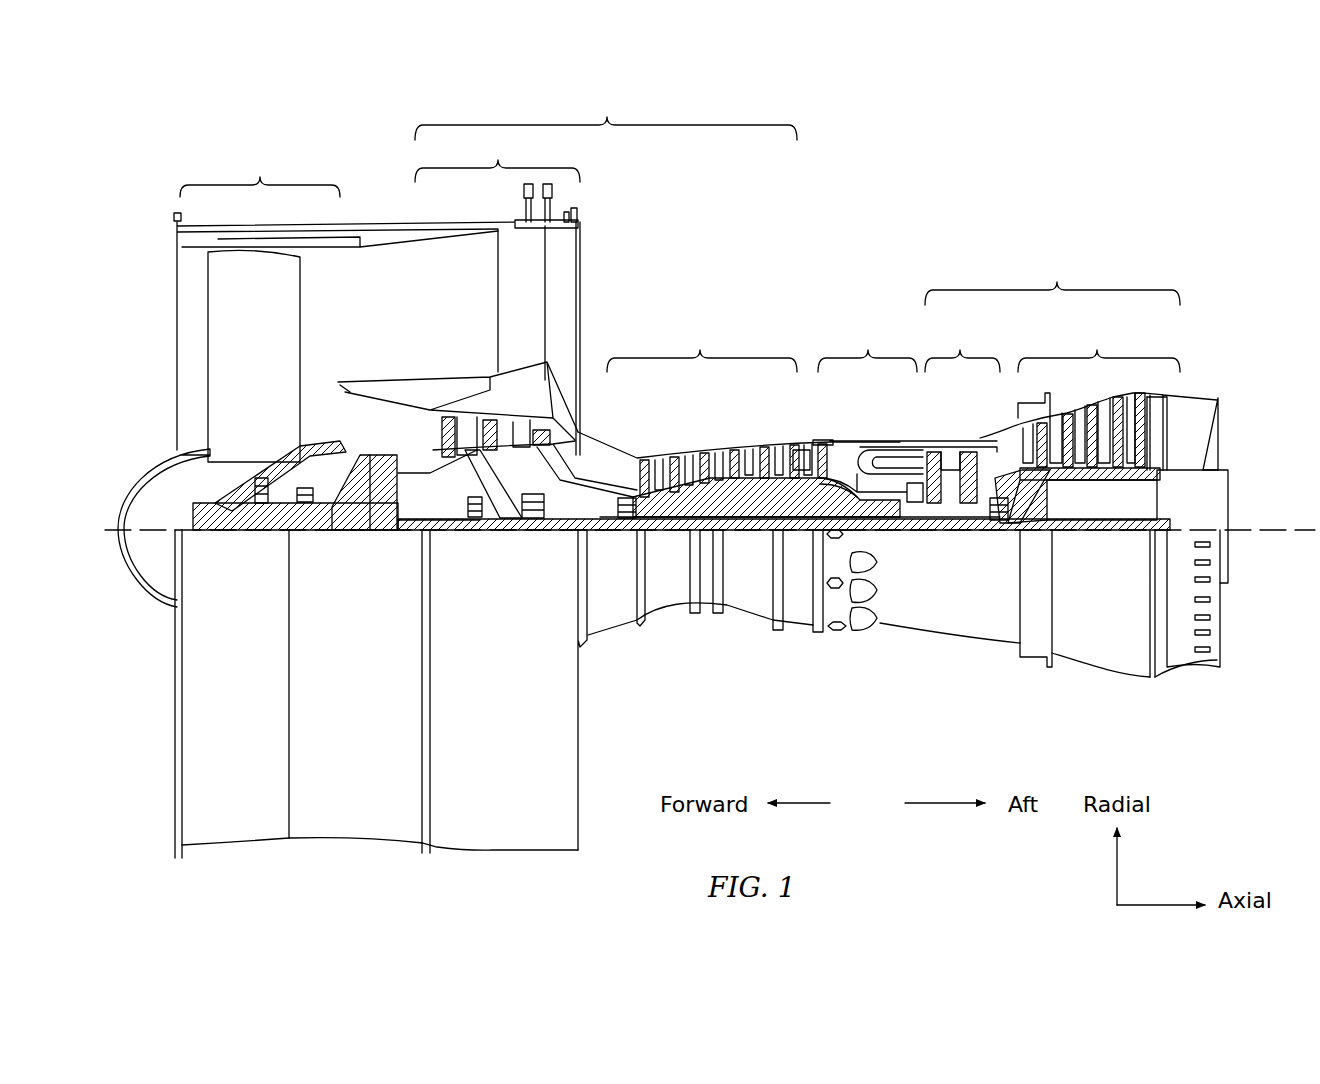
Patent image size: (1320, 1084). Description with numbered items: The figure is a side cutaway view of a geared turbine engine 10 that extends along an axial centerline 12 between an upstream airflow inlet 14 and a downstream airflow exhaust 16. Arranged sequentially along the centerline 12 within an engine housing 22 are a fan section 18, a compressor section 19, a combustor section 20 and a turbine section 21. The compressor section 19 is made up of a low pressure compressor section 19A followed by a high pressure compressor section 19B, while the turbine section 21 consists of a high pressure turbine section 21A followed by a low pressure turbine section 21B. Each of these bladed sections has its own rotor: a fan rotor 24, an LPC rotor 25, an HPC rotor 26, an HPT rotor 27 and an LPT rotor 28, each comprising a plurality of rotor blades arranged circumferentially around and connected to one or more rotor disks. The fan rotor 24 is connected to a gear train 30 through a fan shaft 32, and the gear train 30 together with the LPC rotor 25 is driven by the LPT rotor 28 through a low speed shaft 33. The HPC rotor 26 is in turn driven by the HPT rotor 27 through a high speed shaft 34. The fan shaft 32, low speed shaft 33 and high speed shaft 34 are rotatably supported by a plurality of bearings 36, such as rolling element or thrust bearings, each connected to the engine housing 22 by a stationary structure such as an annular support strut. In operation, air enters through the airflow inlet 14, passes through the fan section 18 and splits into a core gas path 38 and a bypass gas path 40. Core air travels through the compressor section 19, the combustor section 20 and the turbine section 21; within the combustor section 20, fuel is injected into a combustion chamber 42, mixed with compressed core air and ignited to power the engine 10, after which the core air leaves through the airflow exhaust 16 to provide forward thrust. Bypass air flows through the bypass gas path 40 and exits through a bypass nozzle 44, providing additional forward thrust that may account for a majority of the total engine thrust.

The geared turbine engine 10 is at (146, 204).
The axial centerline 12 is at (1275, 545).
The airflow inlet 14 is at (177, 295).
The airflow exhaust 16 is at (1220, 428).
The fan section 18 is at (260, 171).
The compressor section 19 is at (606, 114).
The low pressure compressor section 19A is at (497, 156).
The high pressure compressor section 19B is at (702, 347).
The combustor section 20 is at (895, 396).
The turbine section 21 is at (1052, 277).
The high pressure turbine section 21A is at (962, 412).
The low pressure turbine section 21B is at (1099, 396).
The engine housing 22 is at (600, 642).
The fan rotor 24 is at (205, 452).
The LPC rotor 25 is at (479, 520).
The HPC rotor 26 is at (755, 500).
The HPT rotor 27 is at (953, 520).
The LPT rotor 28 is at (1110, 490).
The gear train 30 is at (380, 535).
The fan shaft 32 is at (245, 535).
The low speed shaft 33 is at (798, 540).
The high speed shaft 34 is at (890, 520).
The bearings 36 is at (280, 520).
The core gas path 38 is at (597, 458).
The bypass gas path 40 is at (404, 310).
The combustion chamber 42 is at (880, 468).
The bypass nozzle 44 is at (580, 275).